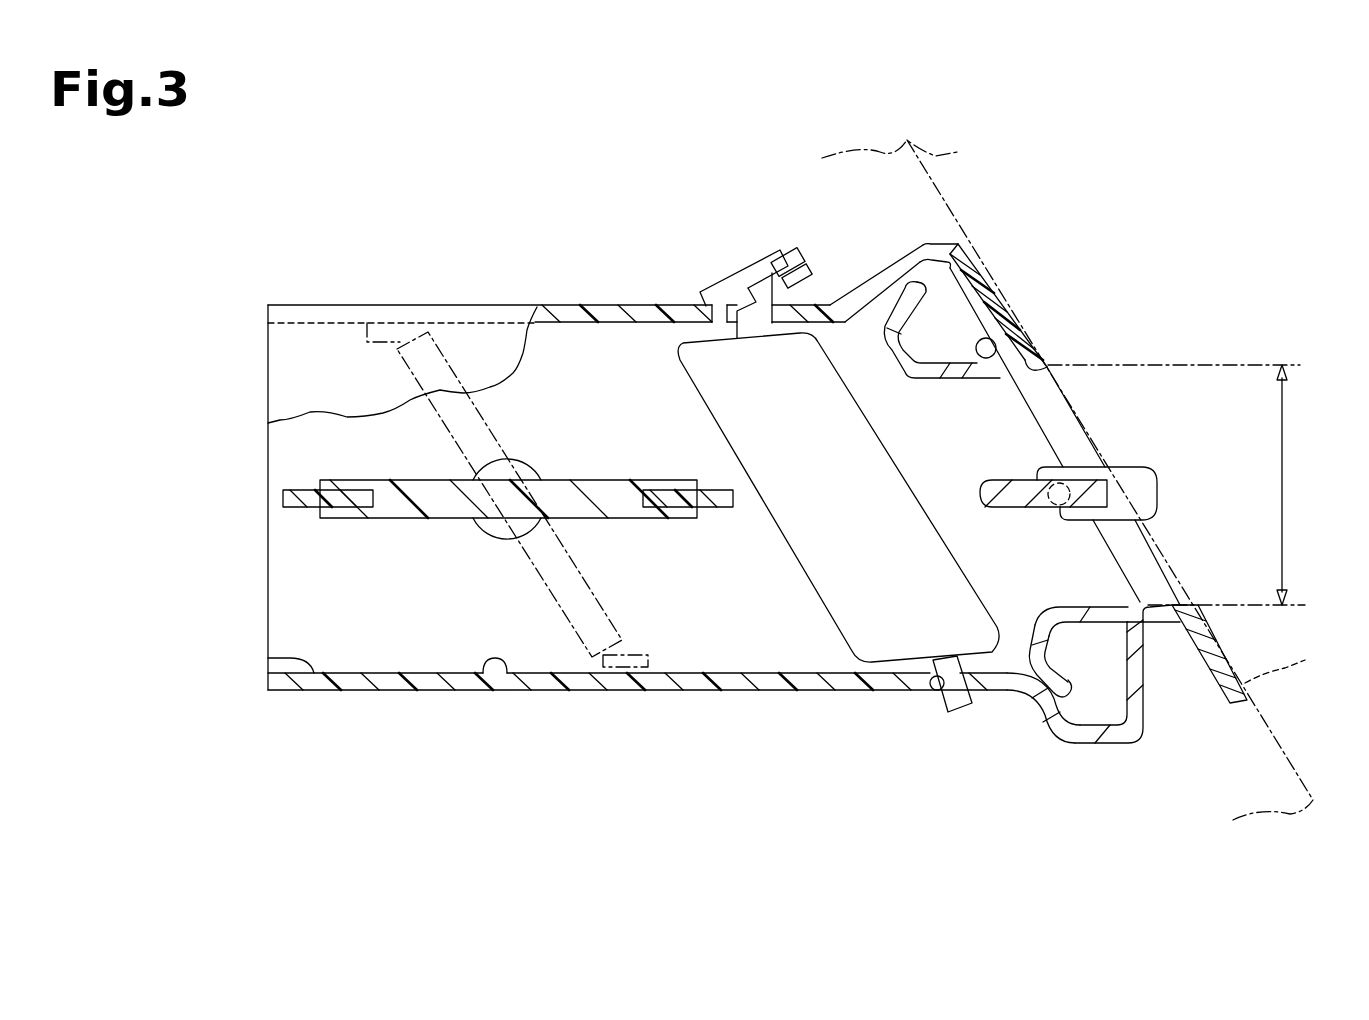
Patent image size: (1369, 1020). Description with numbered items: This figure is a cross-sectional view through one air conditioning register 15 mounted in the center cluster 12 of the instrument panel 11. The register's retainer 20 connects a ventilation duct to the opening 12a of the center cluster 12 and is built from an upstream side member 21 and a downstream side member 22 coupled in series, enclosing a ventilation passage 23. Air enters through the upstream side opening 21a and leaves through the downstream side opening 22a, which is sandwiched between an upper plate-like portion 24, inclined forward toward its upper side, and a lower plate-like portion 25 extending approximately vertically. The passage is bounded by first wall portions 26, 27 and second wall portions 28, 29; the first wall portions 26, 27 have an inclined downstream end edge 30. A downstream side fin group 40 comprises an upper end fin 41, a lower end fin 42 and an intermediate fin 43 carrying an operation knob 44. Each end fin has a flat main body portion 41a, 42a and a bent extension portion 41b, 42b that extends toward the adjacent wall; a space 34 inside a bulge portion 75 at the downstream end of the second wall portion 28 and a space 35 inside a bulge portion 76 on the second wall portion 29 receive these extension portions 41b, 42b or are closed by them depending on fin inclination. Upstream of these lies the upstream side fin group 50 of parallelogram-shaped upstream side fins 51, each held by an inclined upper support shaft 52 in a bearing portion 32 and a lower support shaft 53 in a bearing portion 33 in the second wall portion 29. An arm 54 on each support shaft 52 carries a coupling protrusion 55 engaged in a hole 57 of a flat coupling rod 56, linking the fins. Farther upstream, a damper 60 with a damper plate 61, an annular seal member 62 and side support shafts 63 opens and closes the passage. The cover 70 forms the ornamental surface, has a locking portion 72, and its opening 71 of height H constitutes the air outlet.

The instrument panel 11 is at (1090, 479).
The center cluster 12 is at (957, 152).
The opening 12a is at (1301, 665).
The air conditioning register 15 is at (362, 292).
The retainer 20 is at (722, 497).
The upstream side member 21 is at (712, 690).
The upstream side opening 21a is at (275, 660).
The downstream side member 22 is at (884, 703).
The downstream side opening 22a is at (1150, 640).
The ventilation passage 23 is at (488, 692).
The plate-like portion 24 is at (990, 290).
The plate-like portion 25 is at (1140, 705).
The first wall portion 26 is at (268, 368).
The first wall portion 27 is at (268, 610).
The second wall portion 28 is at (563, 307).
The second wall portion 29 is at (272, 682).
The downstream end edge 30 is at (1060, 415).
The bearing portion 32 is at (703, 303).
The bearing portion 33 is at (935, 690).
The space 34 is at (920, 248).
The space 35 is at (1107, 745).
The downstream side fin group 40 is at (952, 500).
The end fin 41 is at (947, 377).
The main body portion 41a is at (986, 383).
The extension portion 41b is at (905, 380).
The end fin 42 is at (1051, 590).
The main body portion 42a is at (1100, 607).
The extension portion 42b is at (1040, 615).
The intermediate fin 43 is at (1013, 486).
The operation knob 44 is at (1145, 490).
The upstream side fin group 50 is at (800, 594).
The upstream side fin 51 is at (700, 415).
The support shaft 52 is at (740, 338).
The support shaft 53 is at (958, 707).
The arm 54 is at (718, 285).
The coupling protrusion 55 is at (810, 275).
The coupling rod 56 is at (788, 326).
The hole 57 is at (788, 252).
The damper 60 is at (514, 495).
The damper plate 61 is at (380, 518).
The seal member 62 is at (305, 512).
The support shaft 63 is at (480, 522).
The cover 70 is at (1016, 297).
The opening 71 is at (1045, 362).
The locking portion 72 is at (1104, 542).
The bulge portion 75 is at (878, 285).
The bulge portion 76 is at (1048, 735).
The height H is at (1285, 490).